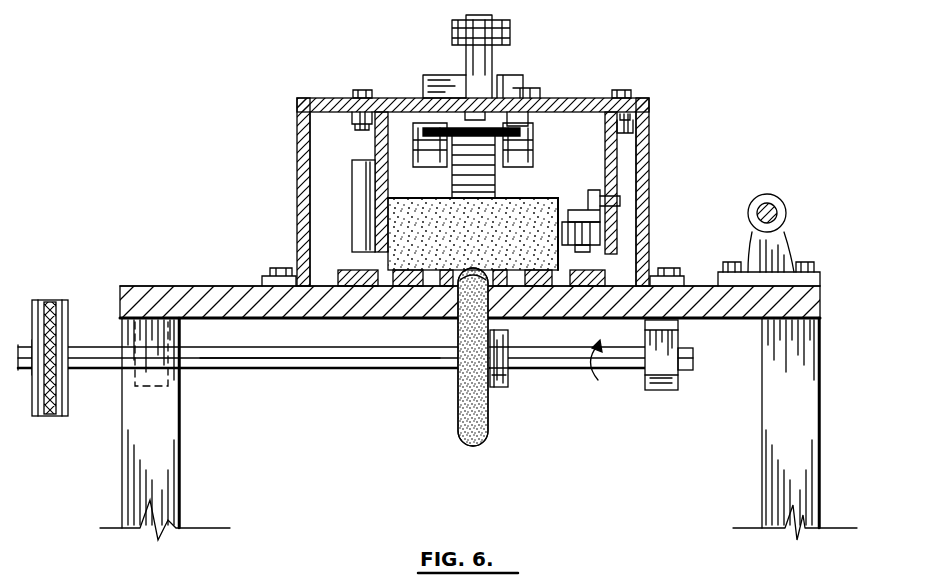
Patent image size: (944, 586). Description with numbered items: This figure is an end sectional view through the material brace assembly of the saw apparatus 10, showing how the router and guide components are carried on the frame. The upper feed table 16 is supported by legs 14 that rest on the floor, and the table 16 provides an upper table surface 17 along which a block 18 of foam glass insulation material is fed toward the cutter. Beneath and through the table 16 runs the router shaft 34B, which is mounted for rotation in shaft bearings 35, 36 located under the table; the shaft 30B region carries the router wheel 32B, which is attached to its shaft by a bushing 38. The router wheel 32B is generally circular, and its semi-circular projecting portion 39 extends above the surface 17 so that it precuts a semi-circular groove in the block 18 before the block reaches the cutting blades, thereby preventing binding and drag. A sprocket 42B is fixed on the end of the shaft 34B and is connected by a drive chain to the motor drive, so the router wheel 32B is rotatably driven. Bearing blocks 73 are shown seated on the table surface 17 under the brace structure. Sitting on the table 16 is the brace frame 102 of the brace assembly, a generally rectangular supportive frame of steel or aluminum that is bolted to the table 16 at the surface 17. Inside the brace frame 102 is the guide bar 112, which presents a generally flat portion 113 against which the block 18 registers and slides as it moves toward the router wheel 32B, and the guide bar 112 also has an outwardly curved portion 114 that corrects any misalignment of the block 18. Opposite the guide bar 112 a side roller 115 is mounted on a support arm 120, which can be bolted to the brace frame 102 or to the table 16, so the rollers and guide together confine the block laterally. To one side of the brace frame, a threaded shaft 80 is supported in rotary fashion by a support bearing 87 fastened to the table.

The saw apparatus 10 is at (672, 78).
The legs 14 is at (160, 466).
The feed table 16 is at (820, 300).
The table surface 17 is at (200, 274).
The block 18 is at (525, 200).
The shaft 30B is at (447, 328).
The router wheel 32B is at (488, 438).
The router shaft 34B is at (371, 356).
The shaft bearing 35 is at (660, 392).
The shaft bearing 36 is at (170, 386).
The bushing 38 is at (500, 388).
The projecting portion 39 is at (468, 268).
The sprocket 42B is at (66, 302).
The bearing blocks 73 is at (420, 292).
The shaft 80 is at (778, 207).
The support bearing 87 is at (793, 240).
The brace frame 102 is at (336, 98).
The guide bar 112 is at (378, 152).
The flat portion 113 is at (380, 184).
The outwardly curved portion 114 is at (360, 195).
The side roller 115 is at (583, 206).
The support arm 120 is at (640, 150).